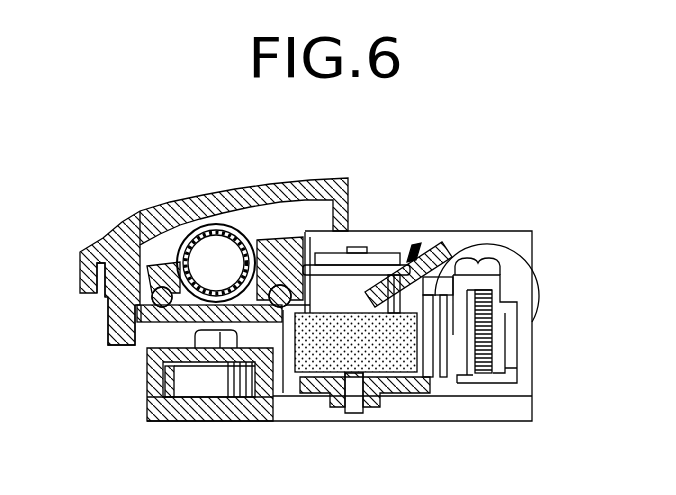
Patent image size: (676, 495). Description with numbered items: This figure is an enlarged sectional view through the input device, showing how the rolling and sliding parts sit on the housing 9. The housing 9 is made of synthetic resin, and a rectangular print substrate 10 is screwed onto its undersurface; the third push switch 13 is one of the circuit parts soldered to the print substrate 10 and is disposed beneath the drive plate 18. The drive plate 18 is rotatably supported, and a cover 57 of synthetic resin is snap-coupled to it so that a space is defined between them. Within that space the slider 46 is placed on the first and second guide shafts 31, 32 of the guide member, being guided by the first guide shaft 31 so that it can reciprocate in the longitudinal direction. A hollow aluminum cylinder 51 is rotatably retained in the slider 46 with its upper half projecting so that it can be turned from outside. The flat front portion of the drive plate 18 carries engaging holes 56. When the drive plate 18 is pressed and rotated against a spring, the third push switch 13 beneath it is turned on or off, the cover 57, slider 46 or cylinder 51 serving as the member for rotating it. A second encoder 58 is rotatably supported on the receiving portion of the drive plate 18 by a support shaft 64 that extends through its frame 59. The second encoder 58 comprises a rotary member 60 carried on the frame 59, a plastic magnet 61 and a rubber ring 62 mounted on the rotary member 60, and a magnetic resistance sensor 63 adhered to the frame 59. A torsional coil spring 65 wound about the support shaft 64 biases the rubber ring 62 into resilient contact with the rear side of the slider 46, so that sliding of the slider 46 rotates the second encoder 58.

The housing 9 is at (148, 382).
The print substrate 10 is at (263, 412).
The third push switch 13 is at (206, 385).
The drive plate 18 is at (153, 323).
The first guide shaft 31 is at (284, 393).
The second guide shaft 32 is at (108, 298).
The slider 46 is at (278, 232).
The cylinder 51 is at (213, 225).
The engaging holes 56 is at (108, 330).
The cover 57 is at (180, 214).
The second encoder 58 is at (425, 238).
The frame 59 is at (515, 282).
The rotary member 60 is at (357, 278).
The plastic magnet 61 is at (393, 368).
The rubber ring 62 is at (410, 244).
The magnetic resistance sensor 63 is at (425, 385).
The support shaft 64 is at (490, 356).
The torsional coil spring 65 is at (445, 322).